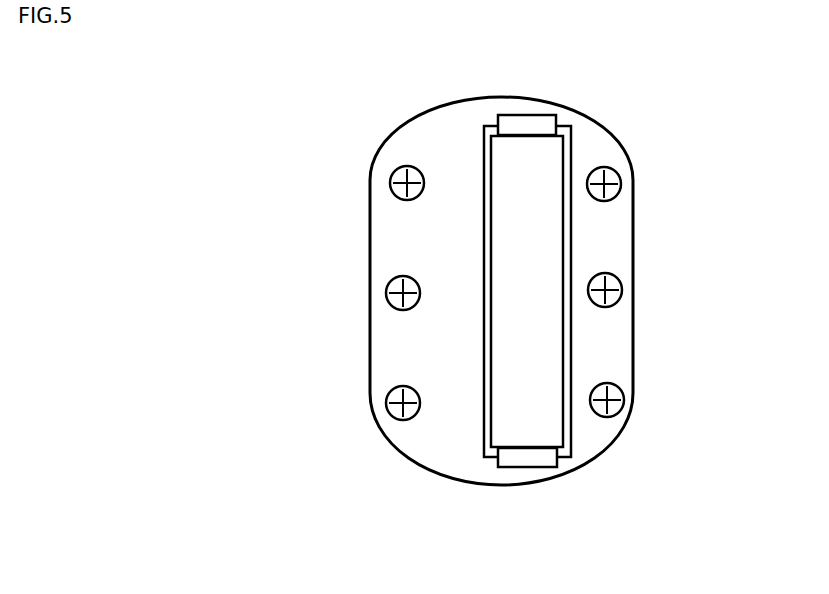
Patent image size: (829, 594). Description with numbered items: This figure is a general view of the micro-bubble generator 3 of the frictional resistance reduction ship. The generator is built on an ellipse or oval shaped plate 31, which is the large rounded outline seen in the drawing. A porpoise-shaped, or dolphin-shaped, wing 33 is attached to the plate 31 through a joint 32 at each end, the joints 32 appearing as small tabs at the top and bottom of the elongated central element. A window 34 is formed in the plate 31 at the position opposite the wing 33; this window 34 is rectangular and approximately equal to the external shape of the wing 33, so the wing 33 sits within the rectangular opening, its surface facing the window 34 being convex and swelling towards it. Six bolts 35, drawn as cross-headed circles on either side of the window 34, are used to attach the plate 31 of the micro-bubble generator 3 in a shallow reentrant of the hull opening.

The micro-bubble generator 3 is at (503, 293).
The plate 31 is at (435, 123).
The joint 32 is at (522, 122).
The wing 33 is at (537, 245).
The window 34 is at (567, 355).
The bolt 35 is at (390, 297).